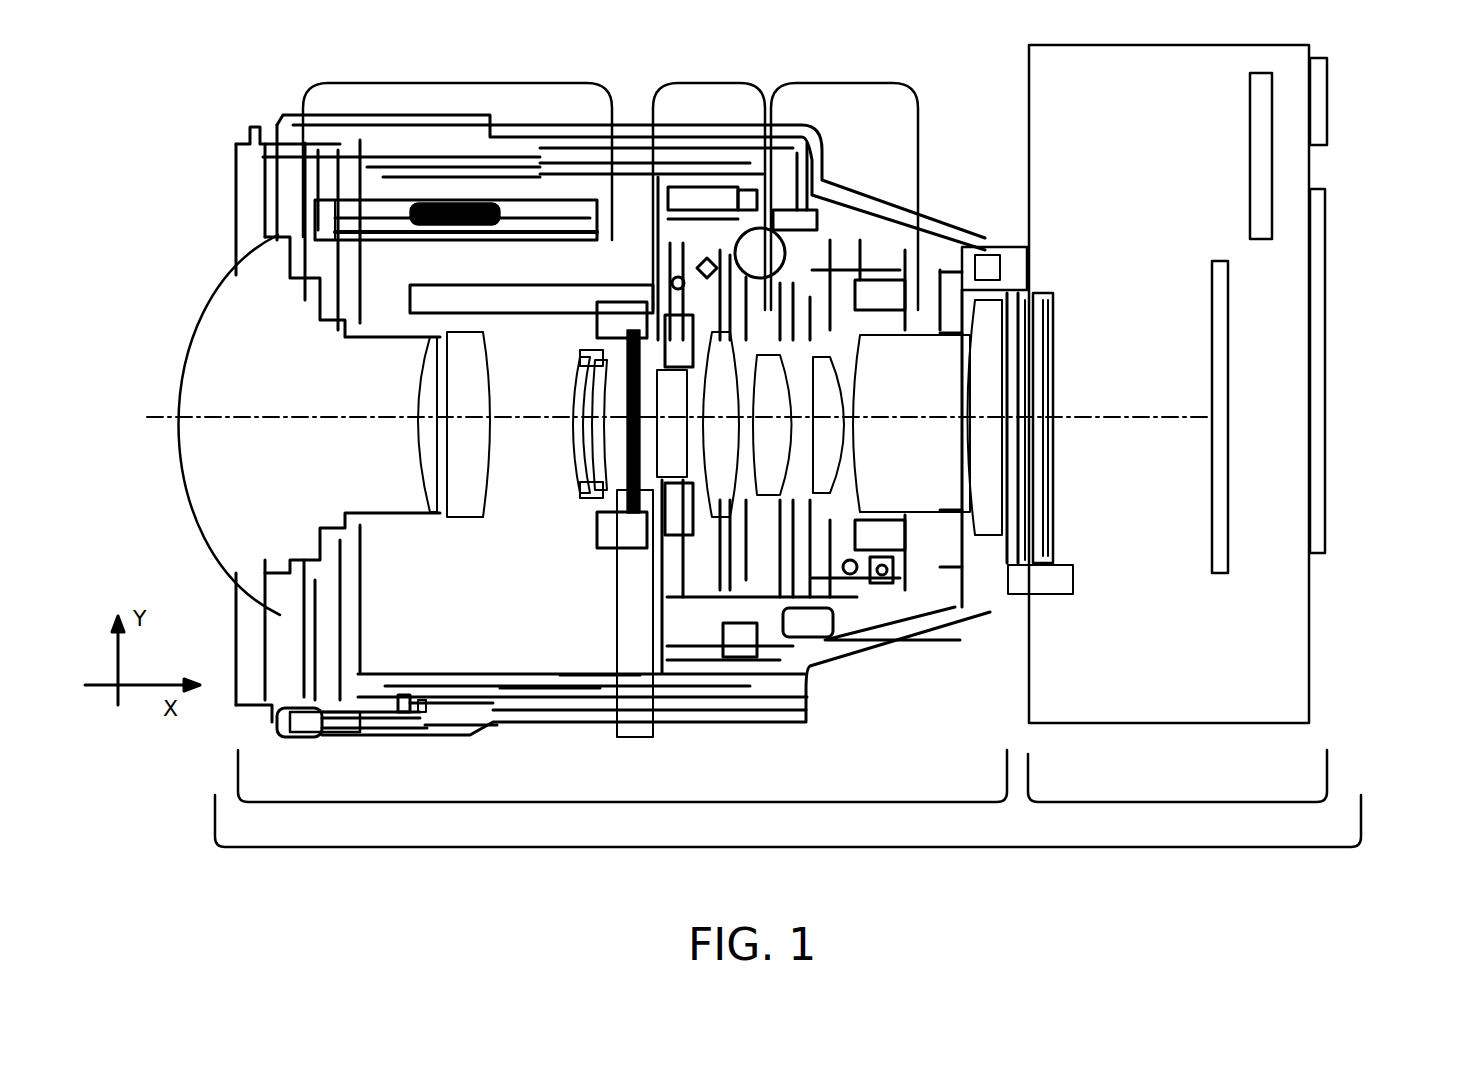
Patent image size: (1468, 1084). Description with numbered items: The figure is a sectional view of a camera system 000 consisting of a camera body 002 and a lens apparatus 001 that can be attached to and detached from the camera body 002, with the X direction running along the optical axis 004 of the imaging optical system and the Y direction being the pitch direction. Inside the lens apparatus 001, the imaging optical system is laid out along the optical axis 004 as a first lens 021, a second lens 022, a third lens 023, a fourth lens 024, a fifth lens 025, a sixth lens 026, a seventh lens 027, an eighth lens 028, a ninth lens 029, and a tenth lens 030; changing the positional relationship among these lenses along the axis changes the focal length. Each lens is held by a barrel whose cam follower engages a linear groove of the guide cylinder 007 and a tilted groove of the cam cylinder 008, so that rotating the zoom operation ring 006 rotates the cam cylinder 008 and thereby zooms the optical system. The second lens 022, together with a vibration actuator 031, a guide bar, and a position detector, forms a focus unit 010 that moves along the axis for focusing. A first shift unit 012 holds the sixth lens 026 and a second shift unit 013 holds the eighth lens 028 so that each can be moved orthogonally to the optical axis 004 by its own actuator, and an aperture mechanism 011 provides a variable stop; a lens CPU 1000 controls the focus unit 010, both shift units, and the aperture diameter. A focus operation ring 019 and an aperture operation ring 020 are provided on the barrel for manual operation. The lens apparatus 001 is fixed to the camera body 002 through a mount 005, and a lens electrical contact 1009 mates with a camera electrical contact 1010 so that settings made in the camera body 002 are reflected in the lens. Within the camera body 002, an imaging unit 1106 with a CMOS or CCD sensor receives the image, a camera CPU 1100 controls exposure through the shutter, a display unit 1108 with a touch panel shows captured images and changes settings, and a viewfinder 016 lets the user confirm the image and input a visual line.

The camera system 000 is at (788, 836).
The lens apparatus 001 is at (637, 446).
The camera body 002 is at (1236, 440).
The optical axis 004 is at (1082, 412).
The mount 005 is at (1040, 295).
The zoom operation ring 006 is at (497, 725).
The guide cylinder 007 is at (608, 675).
The cam cylinder 008 is at (555, 685).
The focus unit 010 is at (457, 149).
The aperture mechanism 011 is at (637, 626).
The first shift unit 012 is at (709, 184).
The second shift unit 013 is at (844, 184).
The viewfinder 016 is at (1325, 102).
The focus operation ring 019 is at (427, 727).
The aperture operation ring 020 is at (355, 728).
The first lens 021 is at (307, 425).
The second lens 022 is at (468, 424).
The third lens 023 is at (578, 408).
The fourth lens 024 is at (613, 455).
The fifth lens 025 is at (668, 395).
The sixth lens 026 is at (719, 424).
The seventh lens 027 is at (773, 425).
The eighth lens 028 is at (822, 480).
The ninth lens 029 is at (911, 423).
The tenth lens 030 is at (988, 372).
The vibration actuator 031 is at (453, 222).
The lens CPU 1000 is at (978, 268).
The lens electrical contact 1009 is at (1020, 583).
The camera electrical contact 1010 is at (1053, 580).
The camera CPU 1100 is at (1262, 148).
The imaging unit 1106 is at (1222, 545).
The display unit 1108 is at (1327, 467).